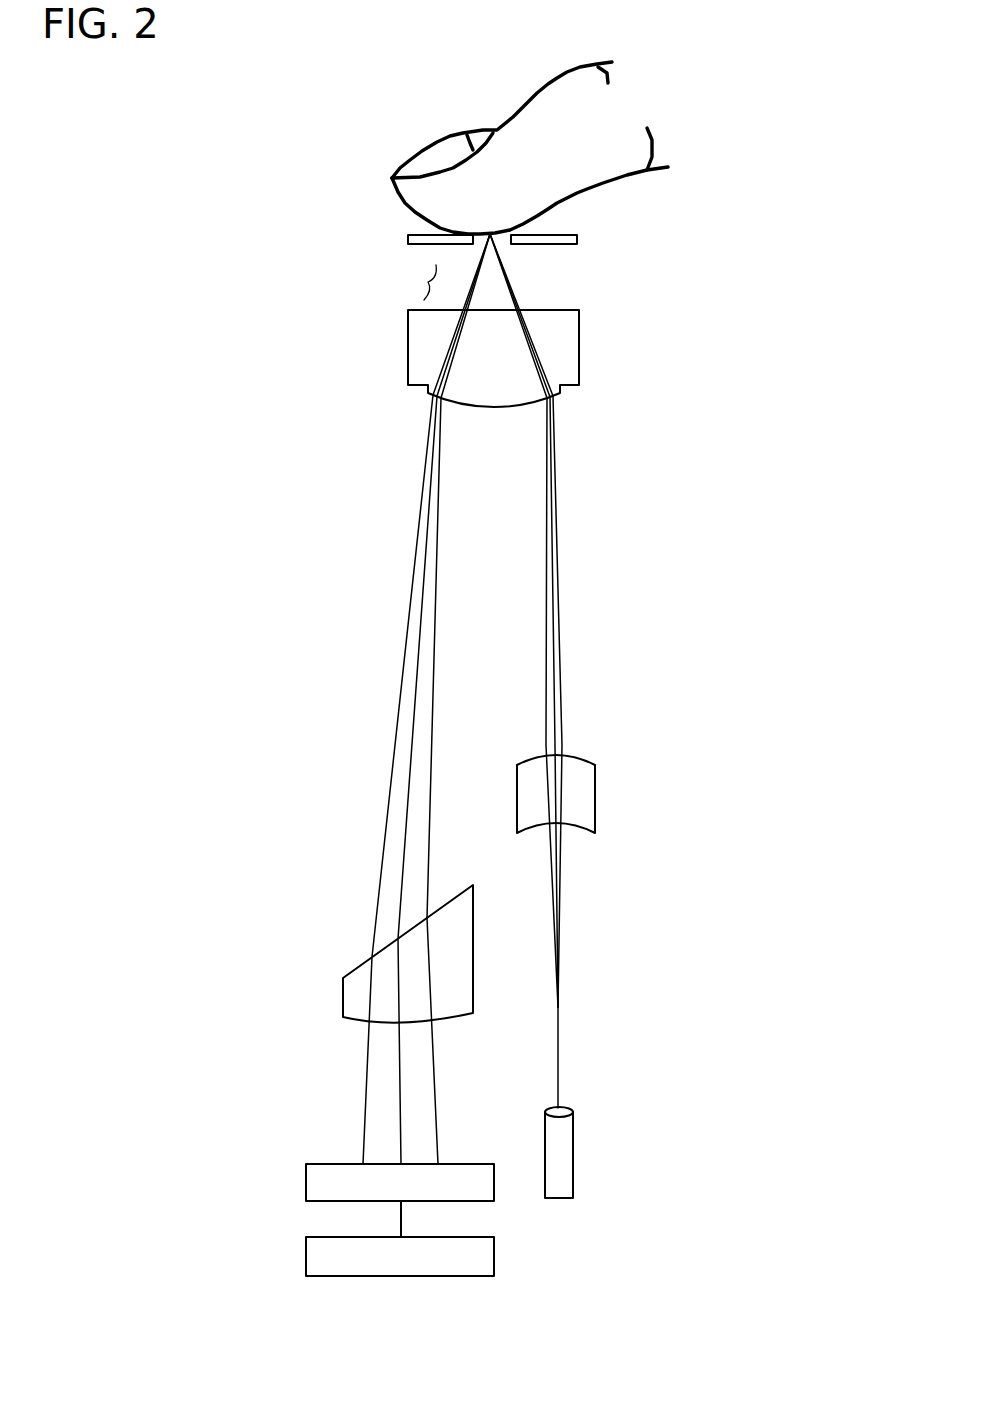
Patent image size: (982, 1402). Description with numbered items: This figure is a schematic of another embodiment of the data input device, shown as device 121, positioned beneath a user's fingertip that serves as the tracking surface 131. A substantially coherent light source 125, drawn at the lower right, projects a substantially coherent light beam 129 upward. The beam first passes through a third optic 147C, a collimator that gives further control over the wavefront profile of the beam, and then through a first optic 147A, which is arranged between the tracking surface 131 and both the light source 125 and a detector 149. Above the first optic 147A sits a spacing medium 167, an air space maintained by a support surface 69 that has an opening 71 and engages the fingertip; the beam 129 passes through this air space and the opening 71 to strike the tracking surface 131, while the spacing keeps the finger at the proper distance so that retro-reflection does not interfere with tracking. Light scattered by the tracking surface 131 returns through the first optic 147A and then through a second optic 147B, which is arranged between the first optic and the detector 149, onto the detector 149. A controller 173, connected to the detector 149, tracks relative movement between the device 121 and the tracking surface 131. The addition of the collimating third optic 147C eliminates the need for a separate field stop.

The device 121 is at (212, 289).
The tracking surface 131 is at (425, 224).
The support surface 69 is at (571, 234).
The opening 71 is at (507, 245).
The spacing medium 167 is at (428, 282).
The first optic 147A is at (408, 350).
The substantially coherent light beam 129 is at (562, 920).
The third optic 147C is at (595, 790).
The second optic 147B is at (342, 998).
The substantially coherent light source 125 is at (573, 1167).
The detector 149 is at (305, 1188).
The controller 173 is at (305, 1257).